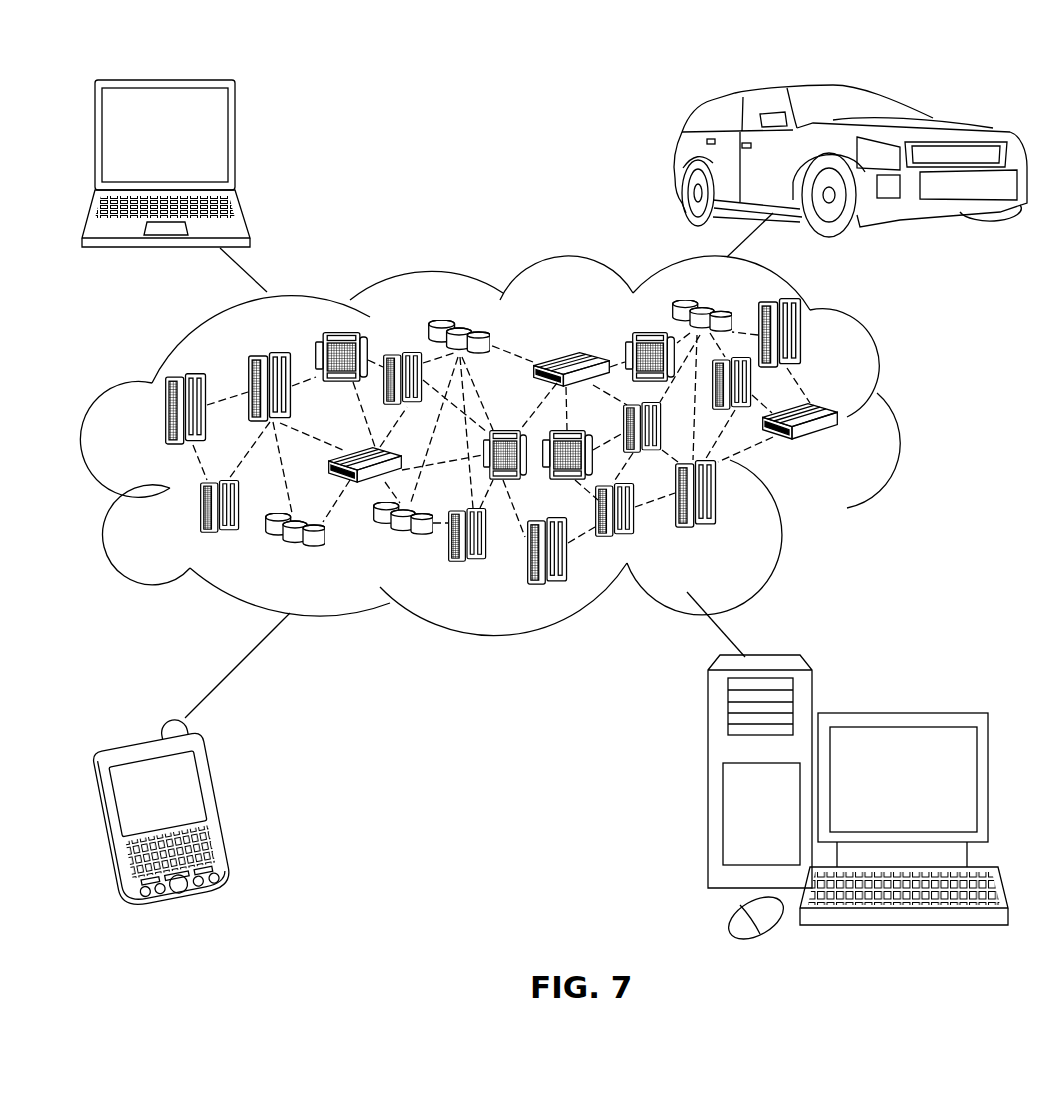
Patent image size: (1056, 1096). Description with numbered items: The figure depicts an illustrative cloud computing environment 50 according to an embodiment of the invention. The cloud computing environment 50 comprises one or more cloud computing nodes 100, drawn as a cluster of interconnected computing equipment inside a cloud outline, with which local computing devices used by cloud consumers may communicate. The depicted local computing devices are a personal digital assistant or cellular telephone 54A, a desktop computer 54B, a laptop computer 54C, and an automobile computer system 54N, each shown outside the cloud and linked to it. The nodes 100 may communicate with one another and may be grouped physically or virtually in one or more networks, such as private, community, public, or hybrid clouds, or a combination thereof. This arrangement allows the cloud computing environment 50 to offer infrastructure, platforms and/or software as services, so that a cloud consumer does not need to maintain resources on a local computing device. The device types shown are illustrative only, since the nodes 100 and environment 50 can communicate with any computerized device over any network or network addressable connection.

The cloud computing environment 50 is at (900, 421).
The cloud computing nodes 100 is at (852, 452).
The personal digital assistant or cellular telephone 54A is at (227, 808).
The desktop computer 54B is at (900, 712).
The laptop computer 54C is at (237, 143).
The automobile computer system 54N is at (681, 161).